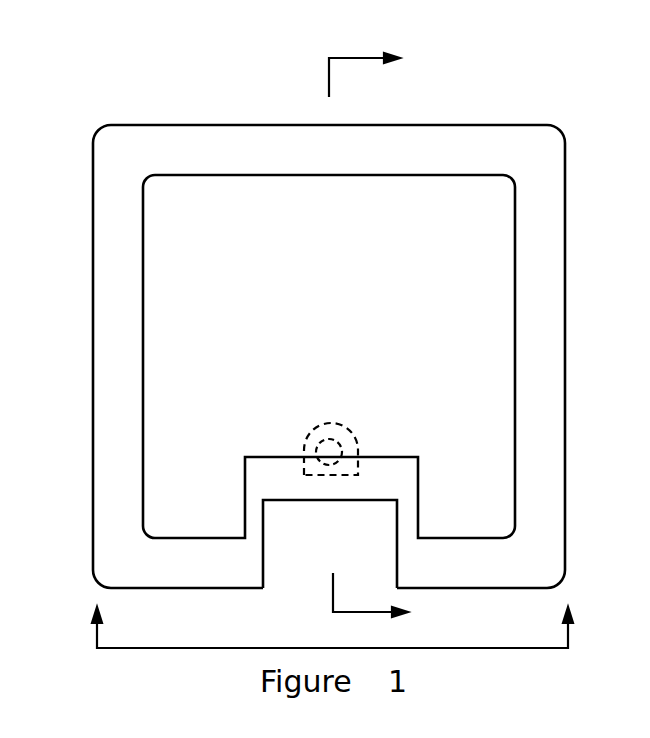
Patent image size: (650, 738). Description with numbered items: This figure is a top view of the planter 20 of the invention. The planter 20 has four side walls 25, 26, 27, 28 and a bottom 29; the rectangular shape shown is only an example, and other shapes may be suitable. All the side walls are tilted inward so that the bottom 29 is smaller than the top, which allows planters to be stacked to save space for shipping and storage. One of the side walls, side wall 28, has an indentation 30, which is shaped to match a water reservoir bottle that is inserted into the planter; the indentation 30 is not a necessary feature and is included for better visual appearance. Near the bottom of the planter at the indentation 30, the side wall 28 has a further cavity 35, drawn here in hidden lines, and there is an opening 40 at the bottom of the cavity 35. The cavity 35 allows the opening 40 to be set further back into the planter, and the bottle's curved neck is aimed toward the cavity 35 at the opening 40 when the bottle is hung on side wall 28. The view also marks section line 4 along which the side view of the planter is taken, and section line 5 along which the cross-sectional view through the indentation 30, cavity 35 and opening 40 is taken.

The planter 20 is at (332, 374).
The side wall 25 is at (92, 350).
The side wall 26 is at (453, 123).
The side wall 27 is at (565, 310).
The side wall 28 is at (180, 590).
The bottom 29 is at (329, 356).
The indentation 30 is at (303, 562).
The cavity 35 is at (318, 428).
The opening 40 is at (336, 447).
The section line 4- 4 is at (332, 627).
The section line 5- 5 is at (379, 338).